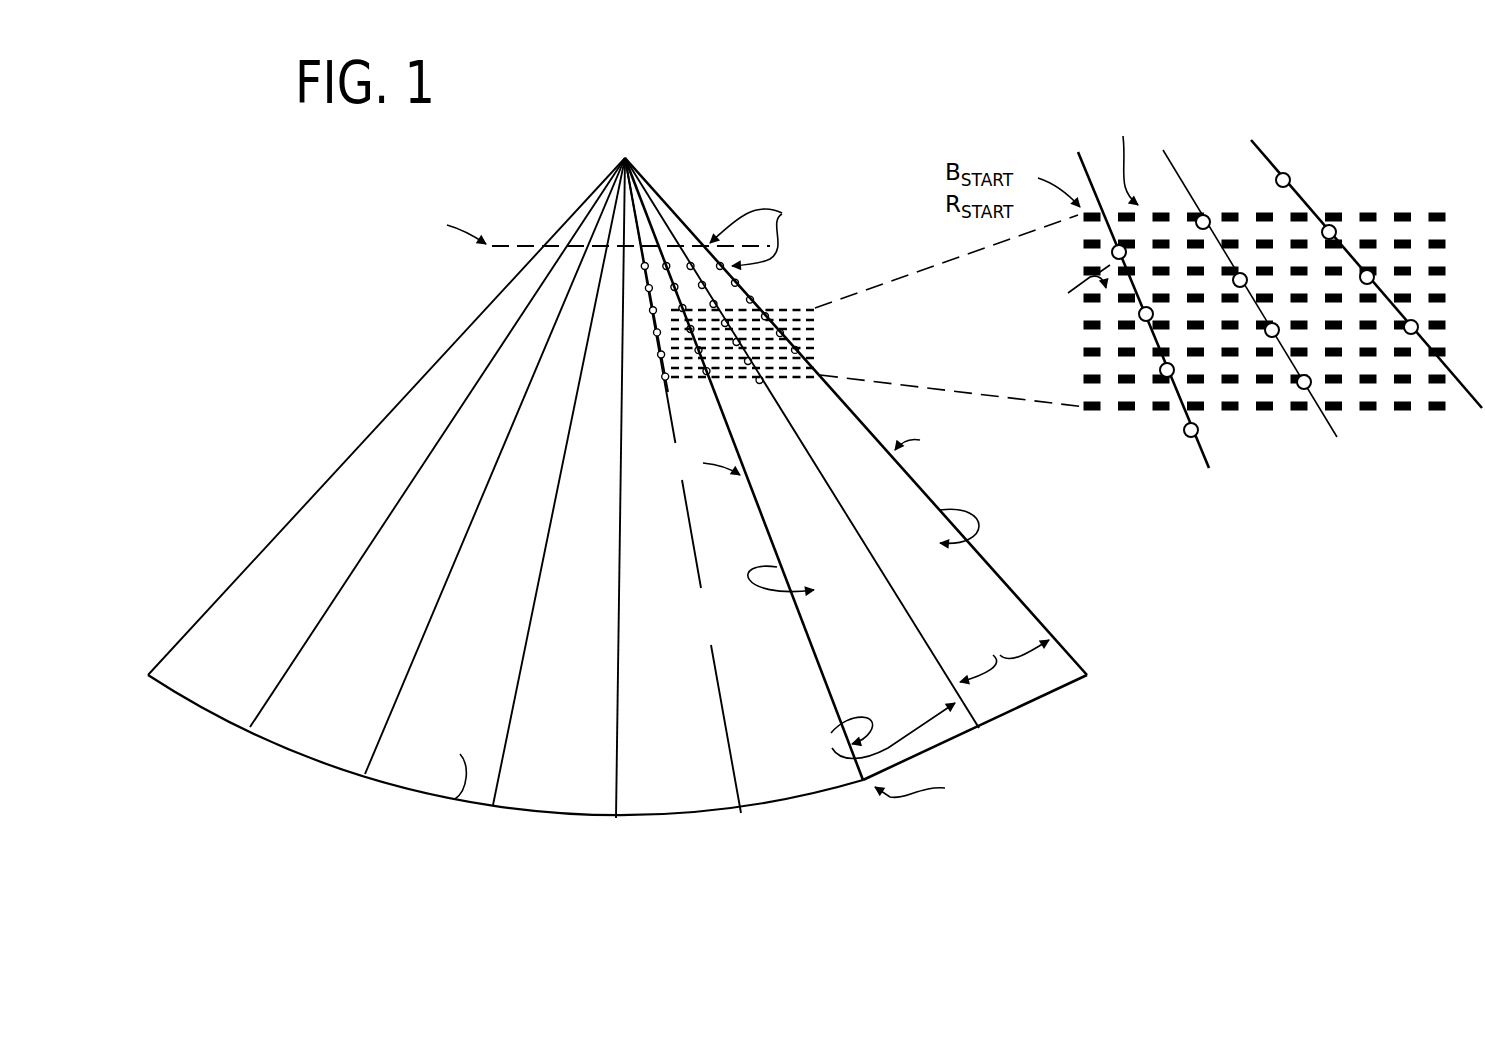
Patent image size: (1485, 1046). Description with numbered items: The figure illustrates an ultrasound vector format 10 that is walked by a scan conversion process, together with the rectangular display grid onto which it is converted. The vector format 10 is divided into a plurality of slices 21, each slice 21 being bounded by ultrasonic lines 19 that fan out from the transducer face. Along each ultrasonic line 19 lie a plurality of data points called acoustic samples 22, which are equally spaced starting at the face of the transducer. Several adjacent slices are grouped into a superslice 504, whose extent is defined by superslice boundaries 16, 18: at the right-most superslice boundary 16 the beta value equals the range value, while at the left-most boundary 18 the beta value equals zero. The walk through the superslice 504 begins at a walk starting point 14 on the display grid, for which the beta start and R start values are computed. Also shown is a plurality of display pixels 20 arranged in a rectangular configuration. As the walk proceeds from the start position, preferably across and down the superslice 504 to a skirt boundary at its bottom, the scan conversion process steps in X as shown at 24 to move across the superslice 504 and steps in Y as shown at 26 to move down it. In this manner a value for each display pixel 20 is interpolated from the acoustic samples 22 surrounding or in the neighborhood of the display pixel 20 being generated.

The vector format 10 is at (397, 400).
The walk starting point 14 is at (862, 785).
The right-most superslice boundary 16 is at (1087, 681).
The left-most superslice boundary 18 is at (870, 502).
The ultrasonic line 19 is at (1280, 304).
The display pixel 20 is at (1375, 409).
The slice 21 is at (428, 797).
The acoustic sample 22 is at (1296, 176).
The step in X 24 is at (1106, 143).
The step in Y 26 is at (1015, 319).
The superslice 504 is at (1028, 596).